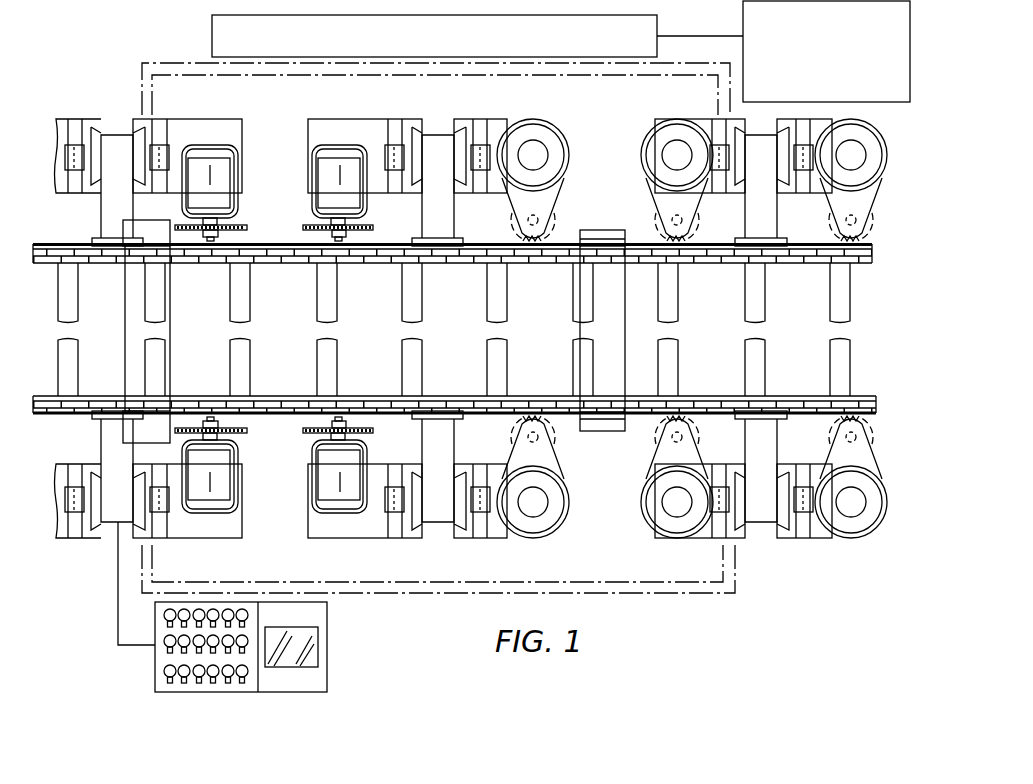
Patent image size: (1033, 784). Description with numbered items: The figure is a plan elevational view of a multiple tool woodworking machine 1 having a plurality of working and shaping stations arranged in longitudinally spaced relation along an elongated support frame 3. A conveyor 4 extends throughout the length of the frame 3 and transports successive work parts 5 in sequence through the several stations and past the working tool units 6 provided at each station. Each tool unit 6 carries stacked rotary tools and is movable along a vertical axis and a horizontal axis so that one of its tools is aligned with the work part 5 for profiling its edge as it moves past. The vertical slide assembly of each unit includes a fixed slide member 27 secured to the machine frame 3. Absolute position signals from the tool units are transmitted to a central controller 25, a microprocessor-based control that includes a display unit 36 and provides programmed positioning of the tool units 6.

The multiple tool woodworking machine 1 is at (125, 66).
The elongated support frame 3 is at (90, 237).
The conveyor 4 is at (205, 346).
The work part 5 is at (607, 227).
The working tool unit 6 is at (639, 156).
The central controller 25 is at (261, 607).
The fixed slide member 27 is at (418, 523).
The display unit 36 is at (315, 642).